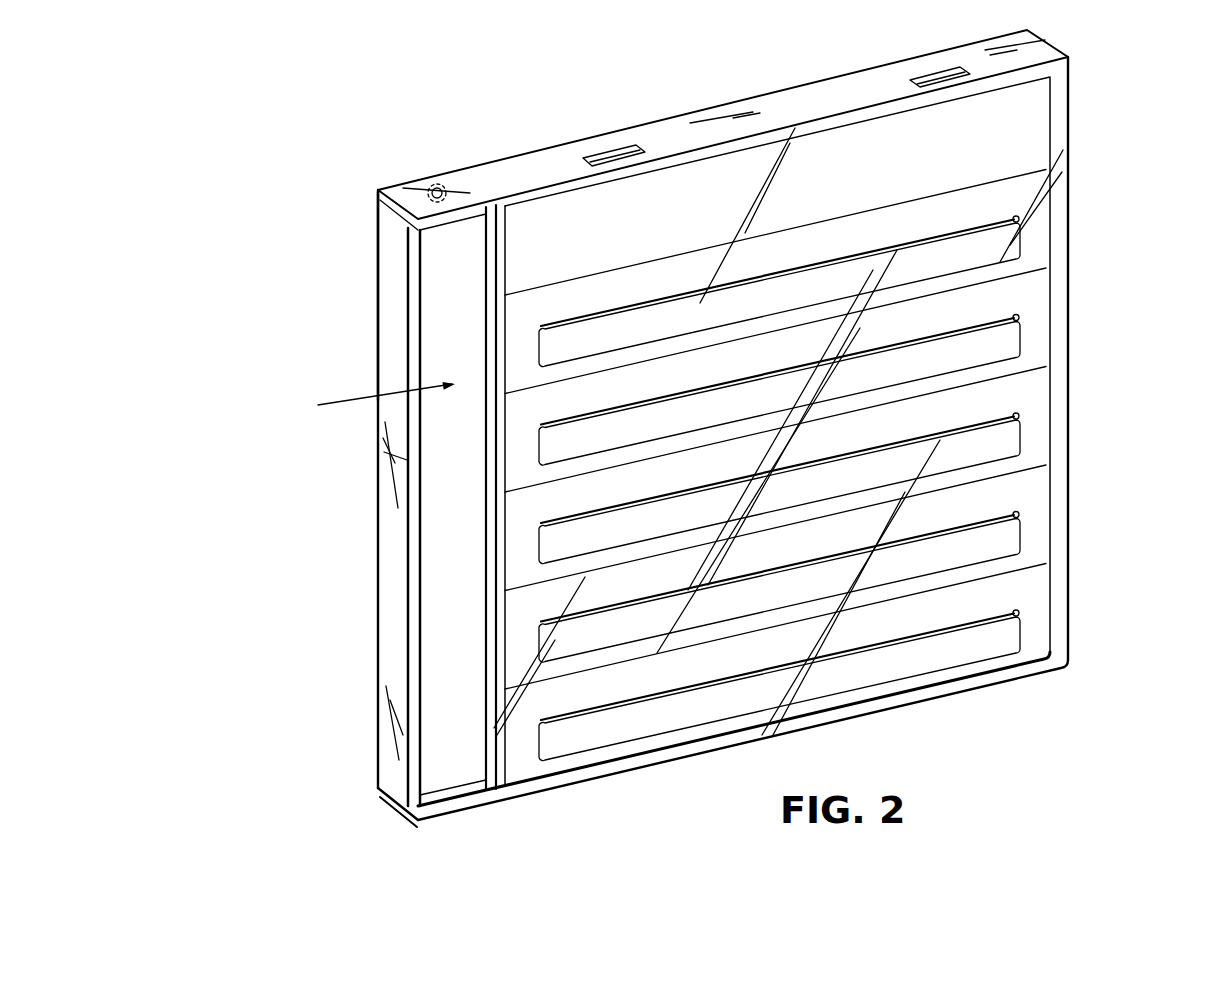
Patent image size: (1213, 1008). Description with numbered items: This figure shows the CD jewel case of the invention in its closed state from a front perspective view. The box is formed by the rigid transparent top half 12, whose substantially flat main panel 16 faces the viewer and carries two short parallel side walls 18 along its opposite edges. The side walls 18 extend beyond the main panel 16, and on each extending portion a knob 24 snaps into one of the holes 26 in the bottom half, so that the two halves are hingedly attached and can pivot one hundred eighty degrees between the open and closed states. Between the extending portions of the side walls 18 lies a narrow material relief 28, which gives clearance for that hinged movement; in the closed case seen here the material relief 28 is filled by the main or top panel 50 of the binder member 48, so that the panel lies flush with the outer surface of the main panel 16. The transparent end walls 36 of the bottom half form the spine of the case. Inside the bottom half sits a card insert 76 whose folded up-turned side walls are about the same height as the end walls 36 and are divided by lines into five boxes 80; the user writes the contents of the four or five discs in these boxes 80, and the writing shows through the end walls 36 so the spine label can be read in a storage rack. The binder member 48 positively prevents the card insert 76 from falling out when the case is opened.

The top half 12 is at (971, 645).
The main panel 16 is at (1035, 345).
The side walls 18 is at (722, 108).
The knob 24 is at (425, 190).
The holes 26 is at (432, 186).
The material relief 28 is at (489, 207).
The end walls 36 is at (392, 507).
The binder member 48 is at (365, 405).
The top panel 50 is at (452, 659).
The card insert 76 is at (390, 604).
The boxes 80 is at (386, 368).